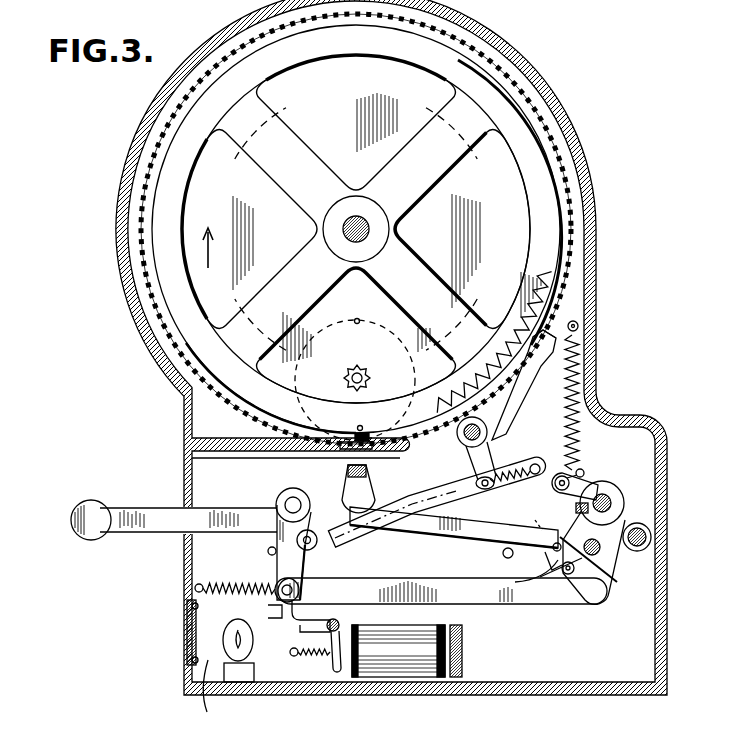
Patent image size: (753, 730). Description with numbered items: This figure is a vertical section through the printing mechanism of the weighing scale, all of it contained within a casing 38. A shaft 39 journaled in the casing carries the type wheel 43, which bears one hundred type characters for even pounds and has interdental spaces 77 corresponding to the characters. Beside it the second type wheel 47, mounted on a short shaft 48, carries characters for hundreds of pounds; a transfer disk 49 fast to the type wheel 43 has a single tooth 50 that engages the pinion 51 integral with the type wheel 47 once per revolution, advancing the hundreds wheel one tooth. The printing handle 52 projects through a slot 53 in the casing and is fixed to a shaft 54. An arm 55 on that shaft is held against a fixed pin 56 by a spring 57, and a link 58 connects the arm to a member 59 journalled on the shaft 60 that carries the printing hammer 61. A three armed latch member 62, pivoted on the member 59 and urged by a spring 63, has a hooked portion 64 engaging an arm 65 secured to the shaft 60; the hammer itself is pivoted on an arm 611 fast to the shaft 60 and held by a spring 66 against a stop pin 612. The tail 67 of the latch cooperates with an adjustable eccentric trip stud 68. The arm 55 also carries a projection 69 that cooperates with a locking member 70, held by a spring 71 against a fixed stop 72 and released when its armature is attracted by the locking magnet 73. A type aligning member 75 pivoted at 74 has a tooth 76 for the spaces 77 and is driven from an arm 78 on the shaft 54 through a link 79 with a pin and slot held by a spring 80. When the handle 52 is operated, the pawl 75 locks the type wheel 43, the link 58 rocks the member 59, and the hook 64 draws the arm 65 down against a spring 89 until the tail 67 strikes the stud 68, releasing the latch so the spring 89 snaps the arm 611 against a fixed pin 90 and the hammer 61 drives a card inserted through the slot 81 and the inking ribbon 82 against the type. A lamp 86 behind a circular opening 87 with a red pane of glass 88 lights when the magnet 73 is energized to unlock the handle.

The casing 38 is at (573, 134).
The shaft 39 is at (357, 221).
The type wheel 43 is at (543, 197).
The second type wheel 47 is at (366, 306).
The short shaft 48 is at (362, 366).
The transfer disk 49 is at (476, 250).
The tooth 50 is at (318, 372).
The pinion 51 is at (373, 379).
The printing handle 52 is at (98, 530).
The slot 53 is at (185, 550).
The shaft 54 is at (286, 503).
The arm 55 is at (297, 586).
The fixed pin 56 is at (268, 551).
The spring 57 is at (250, 573).
The link 58 is at (415, 586).
The member 59 is at (612, 562).
The shaft 60 is at (606, 500).
The printing hammer 61 is at (472, 537).
The arm 611 is at (517, 517).
The stop pin 612 is at (520, 563).
The three armed latch member 62 is at (602, 580).
The spring 63 is at (515, 584).
The hooked portion 64 is at (580, 503).
The arm 65 is at (642, 524).
The spring 66 is at (540, 573).
The tail 67 is at (645, 530).
The trip stud 68 is at (651, 540).
The projection 69 is at (270, 610).
The locking member 70 is at (322, 618).
The spring 71 is at (310, 660).
The fixed stop 72 is at (320, 645).
The locking magnet 73 is at (390, 680).
The pivot 74 is at (462, 434).
The type aligning member 75 is at (532, 383).
The tooth 76 is at (533, 337).
The interdental spaces 77 is at (531, 300).
The arm 78 is at (312, 530).
The link 79 is at (462, 485).
The spring 80 is at (510, 465).
The slot 81 is at (243, 443).
The inking ribbon 82 is at (368, 466).
The lamp 86 is at (235, 633).
The circular opening 87 is at (187, 630).
The pane of glass 88 is at (205, 695).
The spring 89 is at (570, 422).
The fixed pin 90 is at (582, 471).